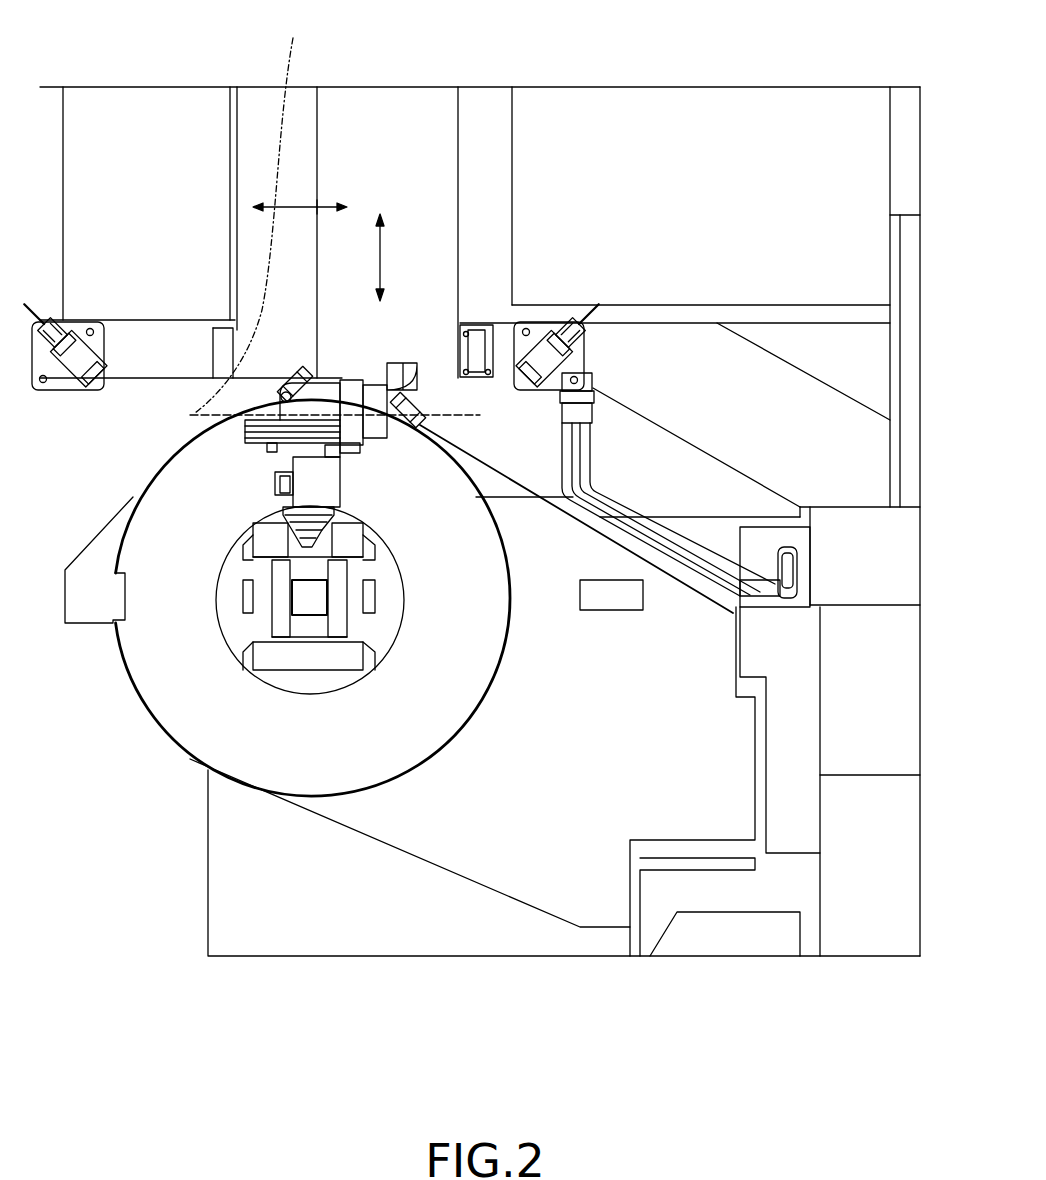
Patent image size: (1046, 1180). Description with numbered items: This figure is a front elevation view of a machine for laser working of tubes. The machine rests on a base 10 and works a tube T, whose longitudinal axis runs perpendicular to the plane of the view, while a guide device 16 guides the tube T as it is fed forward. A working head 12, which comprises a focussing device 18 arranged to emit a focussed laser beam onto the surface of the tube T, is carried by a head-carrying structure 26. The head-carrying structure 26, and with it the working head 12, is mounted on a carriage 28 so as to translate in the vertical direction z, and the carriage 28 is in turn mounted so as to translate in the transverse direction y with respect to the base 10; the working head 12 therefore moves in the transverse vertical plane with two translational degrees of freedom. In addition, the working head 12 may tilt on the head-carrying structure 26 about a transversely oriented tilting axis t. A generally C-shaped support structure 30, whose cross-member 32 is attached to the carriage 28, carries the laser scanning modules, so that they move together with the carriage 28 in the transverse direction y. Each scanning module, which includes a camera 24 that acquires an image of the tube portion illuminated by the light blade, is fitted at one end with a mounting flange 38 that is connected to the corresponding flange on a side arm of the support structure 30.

The base 10 is at (562, 880).
The working head 12 is at (346, 487).
The guide device 16 is at (243, 668).
The focussing device 18 is at (307, 550).
The camera 24 is at (545, 440).
The head-carrying structure 26 is at (458, 253).
The carriage 28 is at (233, 155).
The support structure 30 is at (138, 385).
The cross-member 32 is at (118, 320).
The mounting flange 38 is at (50, 390).
The tilting axis t is at (252, 216).
The transverse direction y is at (300, 194).
The vertical direction z is at (389, 261).
The tube T is at (308, 607).